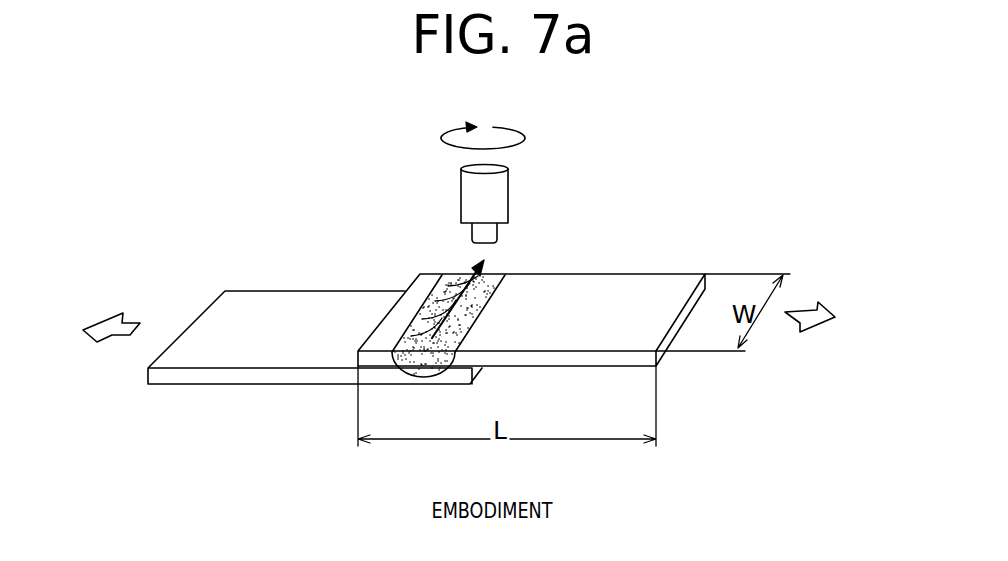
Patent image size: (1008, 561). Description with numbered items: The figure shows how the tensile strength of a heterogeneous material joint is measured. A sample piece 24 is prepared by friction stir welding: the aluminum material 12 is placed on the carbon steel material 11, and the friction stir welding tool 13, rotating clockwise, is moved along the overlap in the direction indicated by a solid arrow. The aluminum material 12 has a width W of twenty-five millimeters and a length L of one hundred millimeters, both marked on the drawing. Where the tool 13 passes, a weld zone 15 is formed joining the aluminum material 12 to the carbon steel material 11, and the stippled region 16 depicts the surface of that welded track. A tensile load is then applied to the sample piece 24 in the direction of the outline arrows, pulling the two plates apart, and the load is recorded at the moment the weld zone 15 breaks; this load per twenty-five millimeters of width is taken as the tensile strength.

The carbon steel material 11 is at (268, 376).
The aluminum material 12 is at (627, 290).
The friction stir welding tool 13 is at (470, 198).
The weld zone 15 is at (416, 375).
The weld surface 16 is at (497, 308).
The sample piece 24 is at (270, 250).